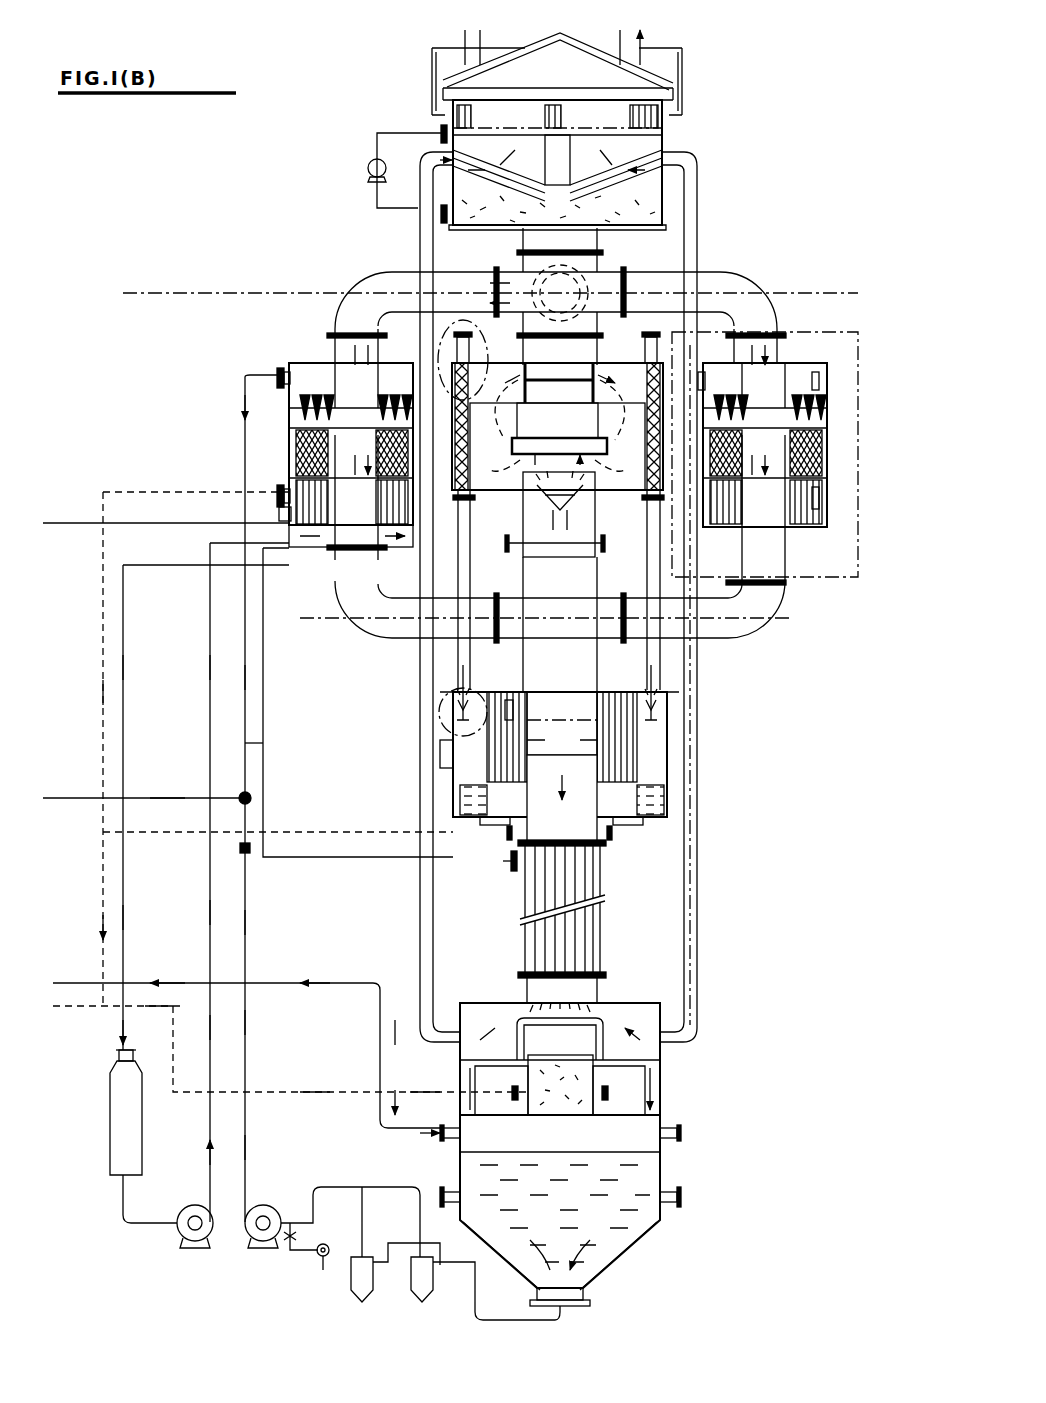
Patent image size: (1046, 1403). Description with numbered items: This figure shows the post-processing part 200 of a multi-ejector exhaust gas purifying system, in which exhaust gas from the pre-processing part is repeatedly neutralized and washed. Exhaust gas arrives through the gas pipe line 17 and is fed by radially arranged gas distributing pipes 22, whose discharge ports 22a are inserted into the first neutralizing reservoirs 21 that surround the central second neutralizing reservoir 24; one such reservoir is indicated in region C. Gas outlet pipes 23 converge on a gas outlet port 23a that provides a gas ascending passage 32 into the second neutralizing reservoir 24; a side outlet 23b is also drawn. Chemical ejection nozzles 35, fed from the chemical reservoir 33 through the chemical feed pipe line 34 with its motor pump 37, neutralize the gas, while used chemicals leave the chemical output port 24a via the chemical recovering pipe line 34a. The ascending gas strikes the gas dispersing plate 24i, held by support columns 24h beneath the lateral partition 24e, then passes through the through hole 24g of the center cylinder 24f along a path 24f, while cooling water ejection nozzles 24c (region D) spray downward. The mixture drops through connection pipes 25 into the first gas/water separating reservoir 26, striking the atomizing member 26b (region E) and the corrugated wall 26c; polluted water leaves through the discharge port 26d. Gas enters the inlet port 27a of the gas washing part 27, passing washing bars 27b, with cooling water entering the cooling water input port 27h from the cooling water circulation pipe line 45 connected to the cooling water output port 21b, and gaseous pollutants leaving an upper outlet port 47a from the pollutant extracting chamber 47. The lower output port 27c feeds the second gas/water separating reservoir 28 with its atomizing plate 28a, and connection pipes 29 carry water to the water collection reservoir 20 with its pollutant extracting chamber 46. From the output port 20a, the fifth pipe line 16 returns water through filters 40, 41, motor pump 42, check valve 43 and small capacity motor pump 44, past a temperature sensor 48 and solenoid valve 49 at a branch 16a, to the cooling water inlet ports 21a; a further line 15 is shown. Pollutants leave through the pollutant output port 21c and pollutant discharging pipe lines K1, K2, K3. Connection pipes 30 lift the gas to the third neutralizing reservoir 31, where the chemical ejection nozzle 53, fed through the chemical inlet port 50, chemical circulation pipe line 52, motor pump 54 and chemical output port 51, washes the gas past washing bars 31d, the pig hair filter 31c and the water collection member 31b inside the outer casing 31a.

The post-processing part 200 is at (485, 45).
The water collection member 31b is at (555, 38).
The outer casing 31a is at (684, 60).
The pig hair filter 31c is at (468, 110).
The chemical ejection nozzle 53 is at (562, 140).
The chemical inlet port 50 is at (441, 132).
The chemical circulation pipe line 52 is at (377, 133).
The motor pump 54 is at (367, 172).
The third neutralizing reservoir 31 is at (665, 145).
The connection pipes 30 is at (697, 205).
The washing bars 31d is at (590, 180).
The chemical output port 51 is at (444, 223).
The gas distributing pipes 22 is at (486, 270).
The cooling water ejection nozzles 24c is at (463, 345).
The second neutralizing reservoir 24 is at (628, 365).
The section C is at (858, 332).
The gas pipe line 17 is at (180, 293).
The discharge port 22a is at (335, 378).
The cooling water inlet ports 21a is at (277, 378).
The first neutralizing reservoirs 21 is at (289, 410).
The detail D is at (474, 360).
The through hole 24g is at (560, 375).
The center cylinder 24f is at (565, 404).
The support columns 24h is at (578, 420).
The pollutant output port 21c is at (279, 495).
The lateral partition 24e is at (557, 446).
The gas dispersing plate 24i is at (550, 461).
The gas outlet port 23a is at (585, 469).
The outlet 23b is at (828, 465).
The chemical output port 24a is at (466, 500).
The gas ascending passage 32 is at (590, 528).
The line 16a is at (75, 523).
The cooling water output port 21b is at (285, 548).
The chemical feed pipe line 34 is at (400, 548).
The connection pipes 25 is at (470, 560).
The chemical ejection nozzles 35 is at (560, 624).
The chemical recovering pipe line 34a is at (337, 580).
The gas outlet pipes 23 is at (372, 642).
The atomizing member 26b is at (668, 708).
The detail E is at (440, 735).
The first gas/water separating reservoir 26 is at (670, 745).
The corrugated wall 26c is at (460, 800).
The inlet port 27a is at (625, 745).
The pollutant extracting chamber 47 is at (574, 832).
The pollutant discharging pipe line K3 is at (103, 728).
The fifth pipe line 16 is at (70, 798).
The solenoid valve 49 is at (243, 793).
The discharge port 26d is at (495, 826).
The gas washing part 27 is at (600, 880).
The pollutant discharging pipe line K2 is at (178, 832).
The temperature sensor 48 is at (244, 853).
The cooling water circulation pipe line 45 is at (370, 857).
The upper outlet port 47a is at (514, 862).
The cooling water input port 27h is at (523, 898).
The washing bars 27b is at (575, 950).
The line 15 is at (70, 983).
The lower output port 27c is at (600, 985).
The connection pipes 29 is at (460, 1062).
The atomizing plate 28a is at (600, 1035).
The second gas/water separating reservoir 28 is at (665, 1062).
The pollutant discharging pipe line K1 is at (272, 1092).
The chemical reservoir 33 is at (142, 1140).
The pollutant extracting chamber 46 is at (550, 1115).
The water collection reservoir 20 is at (665, 1165).
The motor pump 37 is at (190, 1248).
The motor pump 42 is at (255, 1248).
The check valve 43 is at (290, 1250).
The small capacity motor pump 44 is at (323, 1262).
The filter 41 is at (358, 1302).
The filter 40 is at (420, 1302).
The output port 20a is at (592, 1302).